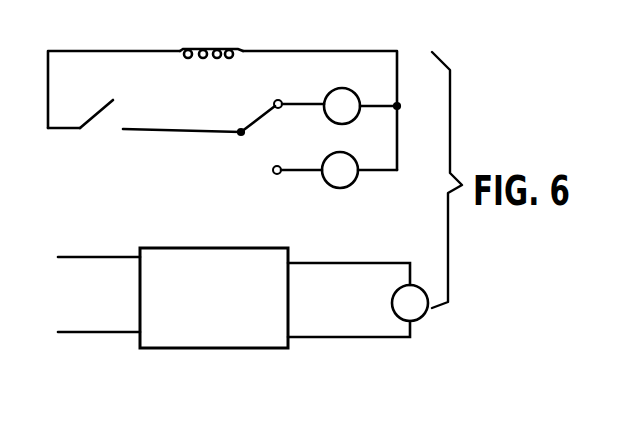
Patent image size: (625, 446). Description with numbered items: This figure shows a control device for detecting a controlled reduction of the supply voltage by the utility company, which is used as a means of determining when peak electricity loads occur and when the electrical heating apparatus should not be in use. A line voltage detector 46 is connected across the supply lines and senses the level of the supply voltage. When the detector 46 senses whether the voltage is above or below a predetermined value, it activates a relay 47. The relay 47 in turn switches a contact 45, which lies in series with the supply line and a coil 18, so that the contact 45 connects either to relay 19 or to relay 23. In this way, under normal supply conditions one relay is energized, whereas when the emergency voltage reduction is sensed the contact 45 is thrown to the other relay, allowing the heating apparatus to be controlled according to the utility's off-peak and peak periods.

The coil / relay winding 18 is at (215, 48).
The relay 19 is at (342, 106).
The relay 23 is at (315, 170).
The contact 45 is at (258, 117).
The line voltage detector 46 is at (250, 348).
The relay 47 is at (427, 312).